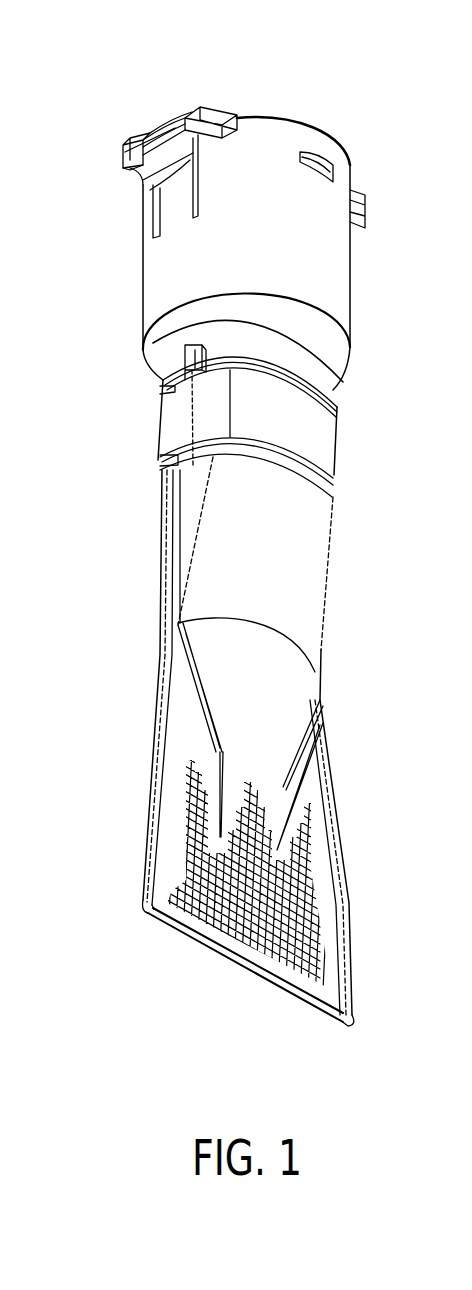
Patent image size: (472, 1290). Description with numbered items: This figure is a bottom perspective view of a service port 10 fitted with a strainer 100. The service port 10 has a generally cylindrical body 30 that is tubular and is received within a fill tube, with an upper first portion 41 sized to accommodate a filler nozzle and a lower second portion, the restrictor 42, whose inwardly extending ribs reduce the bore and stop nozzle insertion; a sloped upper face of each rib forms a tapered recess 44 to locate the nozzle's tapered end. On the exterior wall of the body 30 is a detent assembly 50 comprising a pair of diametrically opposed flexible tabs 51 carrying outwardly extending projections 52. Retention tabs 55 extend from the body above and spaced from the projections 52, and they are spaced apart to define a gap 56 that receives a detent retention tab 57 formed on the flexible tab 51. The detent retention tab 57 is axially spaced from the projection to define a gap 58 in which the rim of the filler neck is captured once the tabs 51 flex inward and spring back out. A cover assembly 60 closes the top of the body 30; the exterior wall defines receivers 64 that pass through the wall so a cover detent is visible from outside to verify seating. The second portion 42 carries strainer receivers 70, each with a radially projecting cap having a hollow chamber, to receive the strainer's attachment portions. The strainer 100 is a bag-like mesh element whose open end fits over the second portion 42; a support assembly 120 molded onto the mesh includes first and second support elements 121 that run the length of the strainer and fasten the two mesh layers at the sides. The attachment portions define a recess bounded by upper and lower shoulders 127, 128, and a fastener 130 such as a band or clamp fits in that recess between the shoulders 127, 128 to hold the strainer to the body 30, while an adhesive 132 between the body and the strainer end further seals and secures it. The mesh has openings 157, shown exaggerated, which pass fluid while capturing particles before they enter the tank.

The service port 10 is at (78, 88).
The body 30 is at (163, 278).
The first portion 41 is at (320, 235).
The restrictor 42 is at (313, 365).
The tapered recess 44 is at (333, 348).
The detent assembly 50 is at (163, 128).
The flexible tab 51 is at (163, 210).
The projection 52 is at (197, 152).
The retention tabs 55 is at (212, 110).
The gap 56 is at (185, 125).
The detent retention tab 57 is at (133, 140).
The gap 58 is at (125, 168).
The cover assembly 60 is at (273, 113).
The receiver 64 is at (317, 153).
The strainer receiver 70 is at (165, 357).
The strainer 100 is at (112, 493).
The support assembly 120 is at (140, 675).
The support element 121 is at (163, 767).
The shoulder 127 is at (160, 388).
The shoulder 128 is at (163, 458).
The fastener 130 is at (310, 430).
The adhesive 132 is at (278, 457).
The openings 157 is at (200, 870).